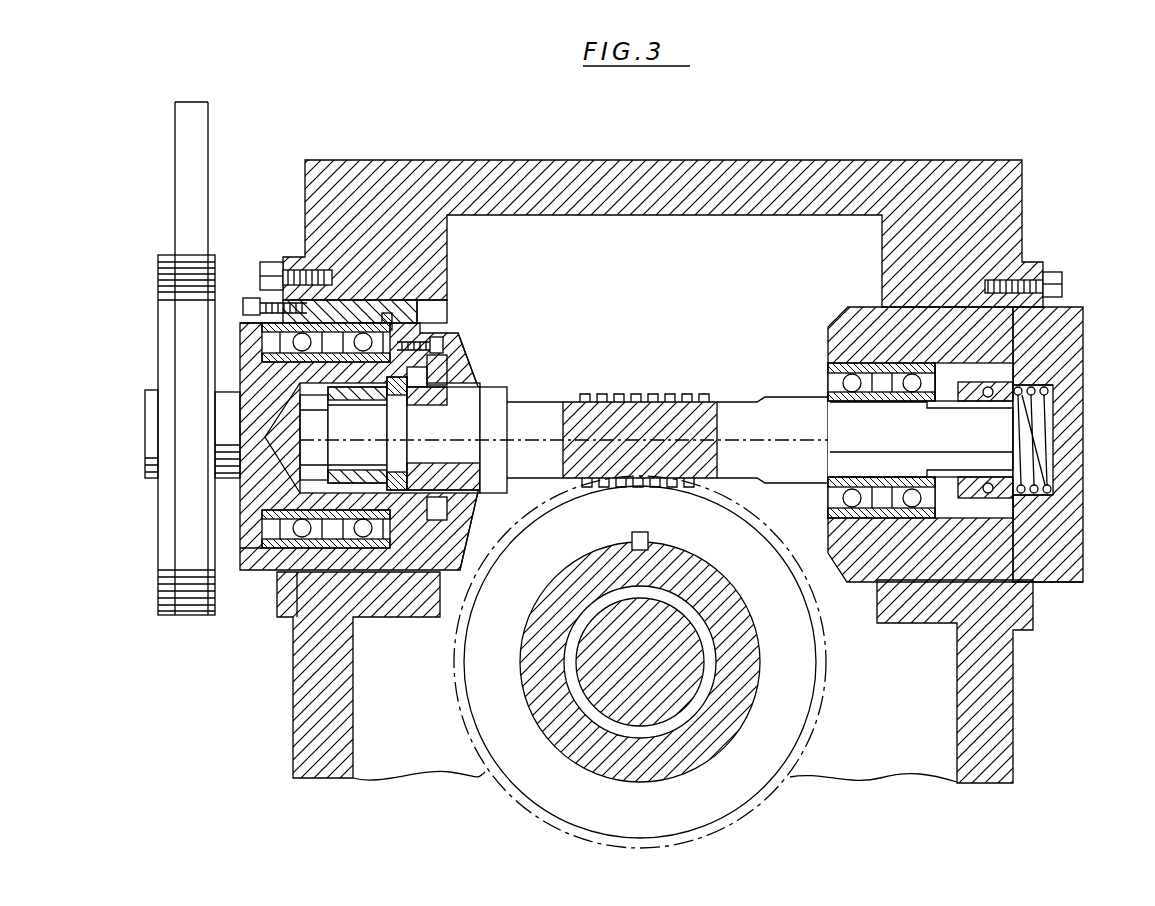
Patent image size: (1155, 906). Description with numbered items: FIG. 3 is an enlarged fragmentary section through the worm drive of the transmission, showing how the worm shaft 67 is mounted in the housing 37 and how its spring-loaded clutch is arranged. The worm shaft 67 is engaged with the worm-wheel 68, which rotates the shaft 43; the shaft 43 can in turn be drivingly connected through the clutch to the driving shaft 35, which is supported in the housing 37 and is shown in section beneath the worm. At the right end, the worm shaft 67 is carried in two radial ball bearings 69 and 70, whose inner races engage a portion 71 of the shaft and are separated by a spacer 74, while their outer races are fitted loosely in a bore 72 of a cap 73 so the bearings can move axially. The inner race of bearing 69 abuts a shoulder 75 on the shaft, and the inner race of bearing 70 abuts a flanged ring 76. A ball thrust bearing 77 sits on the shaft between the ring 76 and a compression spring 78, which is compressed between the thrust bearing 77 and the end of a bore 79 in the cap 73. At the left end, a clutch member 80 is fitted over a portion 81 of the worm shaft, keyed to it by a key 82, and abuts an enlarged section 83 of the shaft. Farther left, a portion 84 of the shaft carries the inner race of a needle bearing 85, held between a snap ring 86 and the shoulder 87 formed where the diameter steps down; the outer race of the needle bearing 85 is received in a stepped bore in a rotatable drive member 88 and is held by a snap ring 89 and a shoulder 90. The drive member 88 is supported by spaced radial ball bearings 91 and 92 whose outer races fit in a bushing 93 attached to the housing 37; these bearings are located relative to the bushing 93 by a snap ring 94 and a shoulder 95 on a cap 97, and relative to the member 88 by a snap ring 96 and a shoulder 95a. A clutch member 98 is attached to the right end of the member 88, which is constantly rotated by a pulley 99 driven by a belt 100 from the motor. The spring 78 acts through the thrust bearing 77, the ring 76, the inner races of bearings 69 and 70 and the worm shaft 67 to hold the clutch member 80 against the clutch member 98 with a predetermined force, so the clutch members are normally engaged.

The housing 37 is at (883, 166).
The belt 100 is at (198, 214).
The pulley 99 is at (158, 329).
The shoulder 90 is at (240, 404).
The snap ring 89 is at (470, 521).
The shoulder 95a is at (452, 372).
The clutch member 80 is at (455, 360).
The radial ball bearing 92 is at (367, 322).
The bushing 93 is at (415, 323).
The snap ring 94 is at (417, 320).
The radial ball bearing 91 is at (310, 277).
The cap 97 is at (256, 302).
The clutch member 98 is at (418, 535).
The shoulder 95 is at (255, 324).
The rotatable drive member 88 is at (245, 505).
The snap ring 96 is at (300, 350).
The needle bearing 85 is at (285, 400).
The snap ring 86 is at (297, 480).
The shaft portion 84 is at (370, 437).
The shoulder 87 is at (260, 592).
The shaft portion 81 is at (443, 438).
The enlarged section 83 is at (507, 396).
The key 82 is at (503, 422).
The worm shaft 67 is at (635, 401).
The spacer 74 is at (836, 324).
The cap 73 is at (1075, 356).
The ball thrust bearing 77 is at (1043, 573).
The radial ball bearing 69 is at (828, 371).
The shoulder 75 is at (833, 477).
The radial ball bearing 70 is at (890, 363).
The shaft portion 71 is at (921, 439).
The bore 72 is at (907, 512).
The flanged ring 76 is at (955, 490).
The compression spring 78 is at (1045, 447).
The bore 79 is at (1047, 478).
The shaft 43 is at (535, 708).
The driving shaft 35 is at (690, 660).
The worm-wheel 68 is at (815, 724).